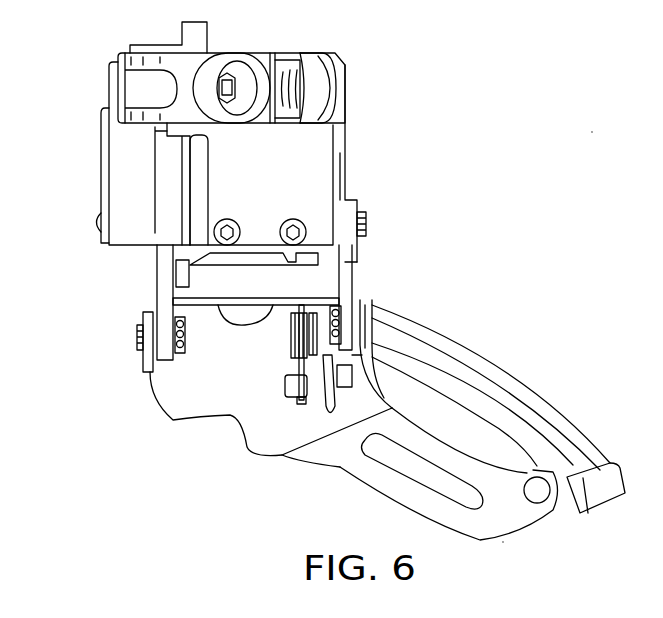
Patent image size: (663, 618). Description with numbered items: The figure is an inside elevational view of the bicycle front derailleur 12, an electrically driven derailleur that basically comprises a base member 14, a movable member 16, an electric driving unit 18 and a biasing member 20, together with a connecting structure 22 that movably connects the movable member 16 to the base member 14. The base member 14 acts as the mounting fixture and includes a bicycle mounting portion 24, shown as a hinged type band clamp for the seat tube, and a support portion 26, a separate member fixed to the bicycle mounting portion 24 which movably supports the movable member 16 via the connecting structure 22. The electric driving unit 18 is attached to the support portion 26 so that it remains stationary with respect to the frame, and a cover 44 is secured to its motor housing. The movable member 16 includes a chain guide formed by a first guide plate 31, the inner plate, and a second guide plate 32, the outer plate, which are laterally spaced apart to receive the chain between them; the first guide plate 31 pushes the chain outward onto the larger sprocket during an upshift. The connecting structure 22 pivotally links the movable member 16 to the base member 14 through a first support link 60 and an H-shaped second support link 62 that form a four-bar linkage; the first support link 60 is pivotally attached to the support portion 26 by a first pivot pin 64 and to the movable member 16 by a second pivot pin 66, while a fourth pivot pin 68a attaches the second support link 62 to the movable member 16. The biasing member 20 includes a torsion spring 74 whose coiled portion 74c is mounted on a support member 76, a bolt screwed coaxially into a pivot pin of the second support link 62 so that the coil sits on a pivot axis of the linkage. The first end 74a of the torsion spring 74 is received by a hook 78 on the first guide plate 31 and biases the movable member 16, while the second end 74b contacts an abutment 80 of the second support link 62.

The front derailleur 12 is at (531, 158).
The base member 14 is at (401, 57).
The movable member 16 is at (503, 372).
The electric driving unit 18 is at (98, 150).
The biasing member 20 is at (285, 342).
The connecting structure 22 is at (132, 304).
The bicycle mounting portion 24 is at (345, 76).
The support portion 26 is at (345, 143).
The first guide plate 31 is at (507, 520).
The second guide plate 32 is at (557, 418).
The cover 44 is at (109, 180).
The first support link 60 is at (356, 268).
The second support link 62 is at (157, 268).
The first pivot pin 64 is at (368, 222).
The second pivot pin 66 is at (373, 322).
The fourth pivot pin 68a is at (140, 335).
The torsion spring 74 is at (318, 313).
The first end 74a is at (297, 400).
The second end 74b is at (330, 425).
The coiled portion 74c is at (314, 305).
The support member 76 is at (290, 330).
The hook 78 is at (286, 386).
The abutment 80 is at (377, 370).